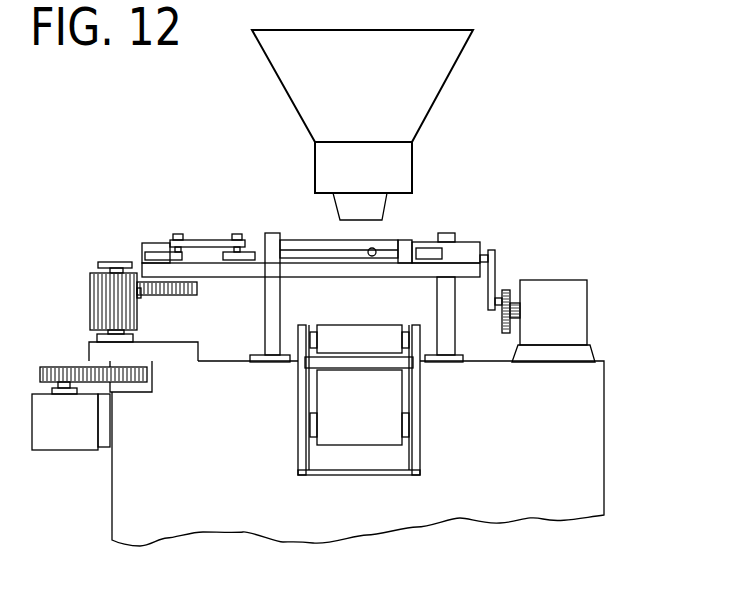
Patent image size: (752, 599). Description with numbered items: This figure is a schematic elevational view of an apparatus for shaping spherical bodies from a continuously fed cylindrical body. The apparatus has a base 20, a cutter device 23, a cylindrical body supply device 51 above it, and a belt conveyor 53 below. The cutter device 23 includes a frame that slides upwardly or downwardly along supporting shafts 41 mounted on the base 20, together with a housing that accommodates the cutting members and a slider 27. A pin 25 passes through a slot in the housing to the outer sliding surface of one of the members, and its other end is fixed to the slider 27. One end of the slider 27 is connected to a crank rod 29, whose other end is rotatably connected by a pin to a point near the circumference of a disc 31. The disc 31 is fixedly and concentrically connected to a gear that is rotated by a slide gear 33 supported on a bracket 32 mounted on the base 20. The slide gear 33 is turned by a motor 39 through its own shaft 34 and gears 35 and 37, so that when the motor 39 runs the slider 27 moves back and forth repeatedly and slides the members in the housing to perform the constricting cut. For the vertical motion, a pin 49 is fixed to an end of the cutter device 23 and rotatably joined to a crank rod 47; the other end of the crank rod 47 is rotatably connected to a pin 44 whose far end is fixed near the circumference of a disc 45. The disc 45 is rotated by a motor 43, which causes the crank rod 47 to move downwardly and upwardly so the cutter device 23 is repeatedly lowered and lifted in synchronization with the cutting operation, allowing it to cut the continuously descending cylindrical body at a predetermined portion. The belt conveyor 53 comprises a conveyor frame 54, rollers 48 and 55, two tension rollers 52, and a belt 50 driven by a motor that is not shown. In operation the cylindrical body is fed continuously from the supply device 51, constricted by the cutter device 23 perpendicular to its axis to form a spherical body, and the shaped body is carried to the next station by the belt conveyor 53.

The base 20 is at (605, 500).
The cutter device 23 is at (450, 221).
The pin 25 is at (371, 257).
The slider 27 is at (301, 256).
The crank rod 29 is at (209, 240).
The disc 31 is at (153, 255).
The bracket 32 is at (116, 262).
The slide gear 33 is at (147, 318).
The shaft 34 is at (128, 355).
The gear 35 is at (97, 368).
The gear 37 is at (40, 374).
The motor 39 is at (63, 447).
The supporting shafts 41 is at (268, 335).
The motor 43 is at (582, 298).
The pin 44 is at (499, 310).
The disc 45 is at (516, 300).
The crank rod 47 is at (503, 278).
The roller 48 is at (406, 452).
The pin 49 is at (489, 262).
The belt 50 is at (392, 333).
The cylindrical body supply device 51 is at (425, 158).
The tension rollers 52 is at (364, 370).
The belt conveyor 53 is at (338, 397).
The conveyor frame 54 is at (298, 462).
The roller 55 is at (318, 338).